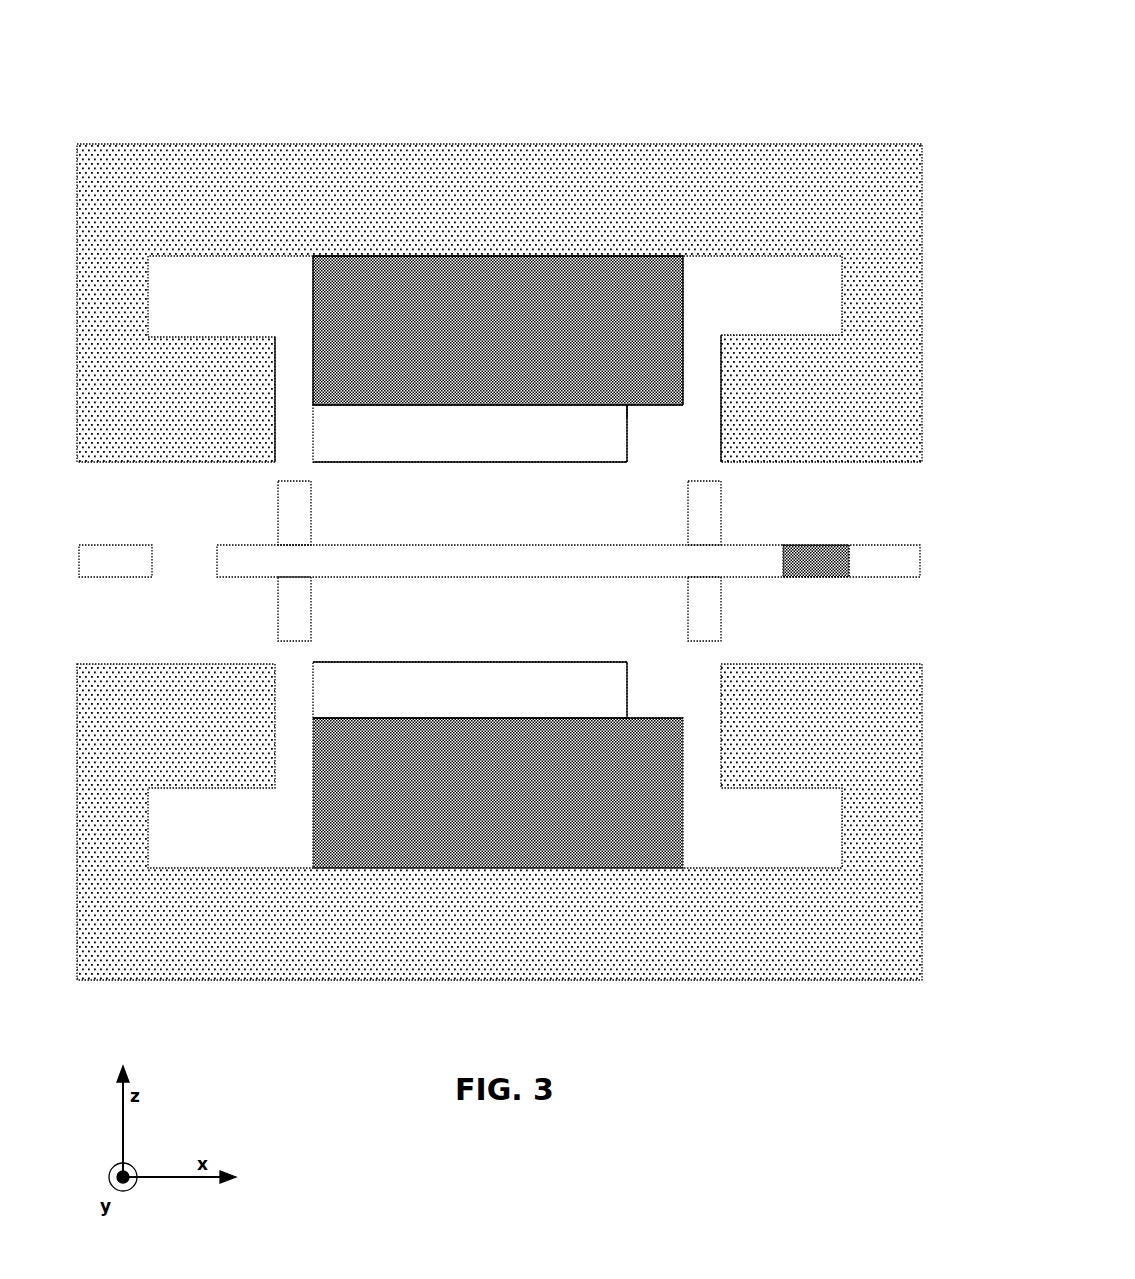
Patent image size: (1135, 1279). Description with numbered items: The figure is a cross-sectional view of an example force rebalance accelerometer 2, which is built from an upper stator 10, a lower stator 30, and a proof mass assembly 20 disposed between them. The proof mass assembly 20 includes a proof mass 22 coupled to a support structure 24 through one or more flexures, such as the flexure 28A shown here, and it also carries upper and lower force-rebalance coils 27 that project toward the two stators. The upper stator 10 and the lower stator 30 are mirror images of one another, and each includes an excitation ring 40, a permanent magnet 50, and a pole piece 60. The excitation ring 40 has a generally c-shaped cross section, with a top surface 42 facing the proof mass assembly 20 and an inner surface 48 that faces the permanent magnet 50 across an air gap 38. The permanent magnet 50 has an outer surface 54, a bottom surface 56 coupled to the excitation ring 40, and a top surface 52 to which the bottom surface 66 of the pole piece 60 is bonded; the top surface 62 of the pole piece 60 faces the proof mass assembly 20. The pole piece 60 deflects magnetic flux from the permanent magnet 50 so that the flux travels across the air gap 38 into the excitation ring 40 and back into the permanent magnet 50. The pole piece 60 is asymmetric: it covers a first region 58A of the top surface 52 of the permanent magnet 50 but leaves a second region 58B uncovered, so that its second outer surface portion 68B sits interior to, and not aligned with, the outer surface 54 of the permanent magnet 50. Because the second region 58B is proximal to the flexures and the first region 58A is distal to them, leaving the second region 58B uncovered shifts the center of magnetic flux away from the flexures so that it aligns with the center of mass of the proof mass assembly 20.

The accelerometer 2 is at (858, 50).
The upper stator 10 is at (150, 136).
The proof mass assembly 20 is at (150, 537).
The lower stator 30 is at (150, 649).
The proof mass 22 is at (568, 561).
The support structure 24 is at (487, 561).
The force-rebalance coils 27 is at (499, 561).
The first flexure 28A is at (816, 561).
The air gap 38 is at (311, 375).
The excitation ring 40 is at (499, 562).
The top surface 42 is at (866, 463).
The inner surface 48 is at (277, 351).
The permanent magnet 50 is at (498, 562).
The top surface 52 is at (658, 407).
The outer surface 54 is at (313, 290).
The bottom surface 56 is at (313, 258).
The first region 58A is at (618, 392).
The second region 58B is at (683, 392).
The pole piece 60 is at (470, 561).
The top surface 62 is at (530, 464).
The bottom surface 66 is at (627, 407).
The second outer surface portion 68B is at (627, 454).